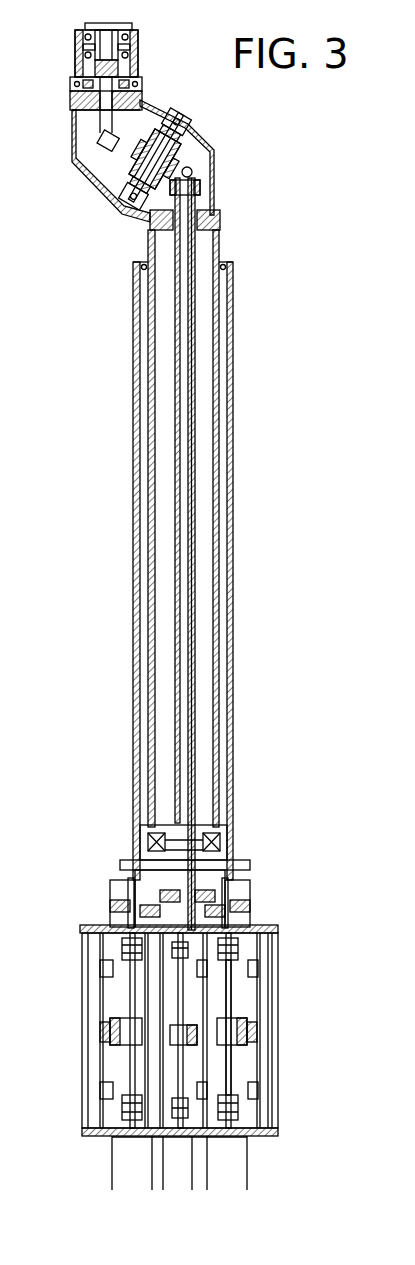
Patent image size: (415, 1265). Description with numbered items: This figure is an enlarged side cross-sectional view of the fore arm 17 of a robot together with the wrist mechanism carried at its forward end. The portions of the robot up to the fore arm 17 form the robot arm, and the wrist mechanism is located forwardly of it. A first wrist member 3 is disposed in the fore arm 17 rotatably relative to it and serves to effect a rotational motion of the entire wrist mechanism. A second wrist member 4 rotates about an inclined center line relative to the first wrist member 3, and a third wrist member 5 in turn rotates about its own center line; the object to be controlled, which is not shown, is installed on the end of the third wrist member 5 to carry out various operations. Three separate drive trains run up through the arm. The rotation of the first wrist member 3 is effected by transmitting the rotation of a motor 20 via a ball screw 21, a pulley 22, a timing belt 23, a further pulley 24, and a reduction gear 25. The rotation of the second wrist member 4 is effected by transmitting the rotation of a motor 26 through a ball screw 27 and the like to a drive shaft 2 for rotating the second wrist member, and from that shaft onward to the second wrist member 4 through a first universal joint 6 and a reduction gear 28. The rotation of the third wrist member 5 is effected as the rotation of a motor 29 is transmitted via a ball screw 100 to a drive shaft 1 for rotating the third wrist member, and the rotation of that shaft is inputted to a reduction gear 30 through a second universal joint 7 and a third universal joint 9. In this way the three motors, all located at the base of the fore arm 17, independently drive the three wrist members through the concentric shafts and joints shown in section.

The drive shaft 1 is at (189, 455).
The drive shaft 2 is at (197, 332).
The first wrist member 3 is at (149, 243).
The second wrist member 4 is at (74, 176).
The third wrist member 5 is at (100, 22).
The first universal joint 6 is at (188, 170).
The second universal joint 7 is at (194, 179).
The third universal joint 9 is at (105, 138).
The fore arm 17 is at (134, 397).
The motor 20 is at (250, 1160).
The ball screw 21 is at (233, 1062).
The pulley 22 is at (238, 905).
The timing belt 23 is at (210, 888).
The pulley 24 is at (115, 897).
The reduction gear 25 is at (207, 828).
The motor 26 is at (112, 1182).
The ball screw 27 is at (128, 990).
The reduction gear 28 is at (138, 178).
The motor 29 is at (160, 1165).
The reduction gear 30 is at (76, 92).
The ball screw 100 is at (175, 1002).